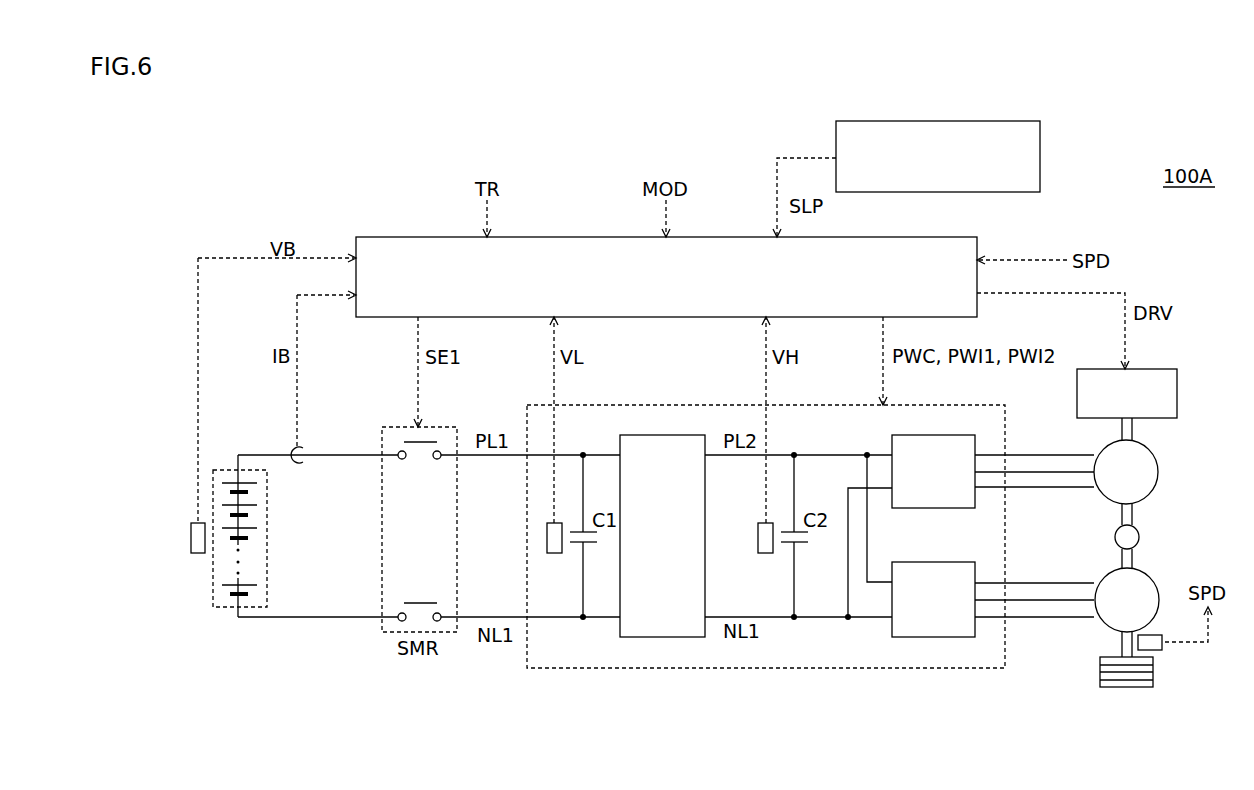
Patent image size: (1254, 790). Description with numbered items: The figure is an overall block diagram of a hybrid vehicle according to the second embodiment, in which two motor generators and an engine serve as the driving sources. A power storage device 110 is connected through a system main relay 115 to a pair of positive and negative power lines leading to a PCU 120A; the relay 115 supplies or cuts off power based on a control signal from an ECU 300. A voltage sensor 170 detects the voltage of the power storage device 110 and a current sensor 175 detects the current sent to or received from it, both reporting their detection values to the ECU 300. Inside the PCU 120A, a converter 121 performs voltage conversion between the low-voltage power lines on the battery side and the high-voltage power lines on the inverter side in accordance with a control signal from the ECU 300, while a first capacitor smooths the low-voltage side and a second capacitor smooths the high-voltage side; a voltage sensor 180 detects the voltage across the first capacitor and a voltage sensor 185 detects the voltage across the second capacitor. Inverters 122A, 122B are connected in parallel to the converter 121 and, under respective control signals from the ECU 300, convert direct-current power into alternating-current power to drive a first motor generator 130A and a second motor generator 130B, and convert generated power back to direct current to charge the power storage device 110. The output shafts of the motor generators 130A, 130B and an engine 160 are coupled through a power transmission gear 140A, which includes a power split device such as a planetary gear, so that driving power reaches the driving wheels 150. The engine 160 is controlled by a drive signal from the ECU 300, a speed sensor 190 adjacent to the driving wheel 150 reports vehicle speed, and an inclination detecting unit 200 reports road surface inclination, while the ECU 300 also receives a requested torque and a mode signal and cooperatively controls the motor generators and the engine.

The power storage device 110 is at (229, 470).
The system main relay 115 is at (443, 437).
The PCU 120A is at (970, 405).
The converter 121 is at (658, 435).
The first inverter 122A is at (932, 435).
The second inverter 122B is at (932, 564).
The first motor generator 130A is at (1158, 471).
The second motor generator 130B is at (1150, 576).
The power transmission gear 140A is at (1114, 539).
The driving wheels 150 is at (1130, 688).
The engine 160 is at (1160, 369).
The voltage sensor 170 is at (190, 540).
The current sensor 175 is at (300, 466).
The voltage sensor 180 is at (555, 556).
The voltage sensor 185 is at (766, 556).
The speed sensor 190 is at (1163, 652).
The inclination detecting unit 200 is at (991, 121).
The ECU 300 is at (898, 238).